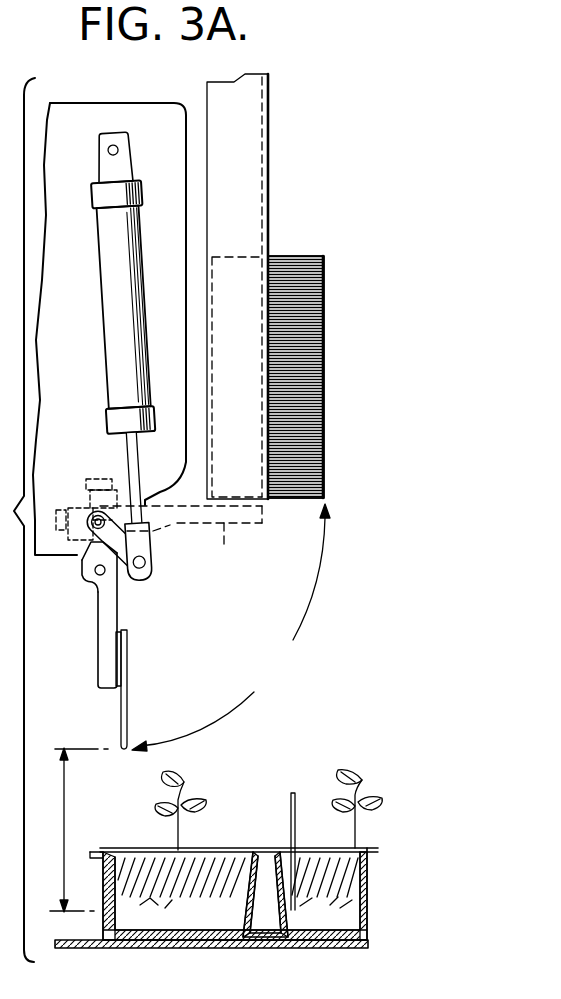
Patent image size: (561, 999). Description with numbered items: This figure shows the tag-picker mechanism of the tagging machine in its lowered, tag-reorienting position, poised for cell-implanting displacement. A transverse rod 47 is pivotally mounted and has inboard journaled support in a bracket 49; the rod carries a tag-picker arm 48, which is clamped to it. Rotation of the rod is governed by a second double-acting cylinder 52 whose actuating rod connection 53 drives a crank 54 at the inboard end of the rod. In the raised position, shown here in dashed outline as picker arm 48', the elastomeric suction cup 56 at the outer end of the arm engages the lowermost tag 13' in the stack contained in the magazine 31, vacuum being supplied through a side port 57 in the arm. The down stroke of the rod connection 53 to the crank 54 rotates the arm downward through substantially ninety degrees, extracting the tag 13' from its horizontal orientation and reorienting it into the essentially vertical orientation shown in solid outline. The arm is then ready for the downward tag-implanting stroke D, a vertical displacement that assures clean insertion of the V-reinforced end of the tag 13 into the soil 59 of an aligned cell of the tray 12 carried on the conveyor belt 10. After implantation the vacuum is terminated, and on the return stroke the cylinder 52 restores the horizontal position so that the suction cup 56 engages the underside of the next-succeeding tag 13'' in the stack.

The conveyor belt 10 is at (78, 949).
The tray 12 is at (100, 912).
The tag 13 is at (270, 850).
The lowermost tag 13' is at (155, 689).
The next-succeeding tag 13'' is at (293, 394).
The magazine 31 is at (268, 158).
The transverse rod 47 is at (95, 515).
The tag-picker arm 48 is at (79, 620).
The picker arm in horizontal position 48' is at (181, 534).
The bracket 49 is at (86, 380).
The second double-acting cylinder 52 is at (108, 272).
The actuating rod connection 53 is at (128, 450).
The crank 54 is at (110, 549).
The elastomeric suction cup 56 is at (118, 657).
The side port 57 is at (88, 576).
The soil 59 is at (137, 853).
The tag-implanting stroke D is at (79, 830).